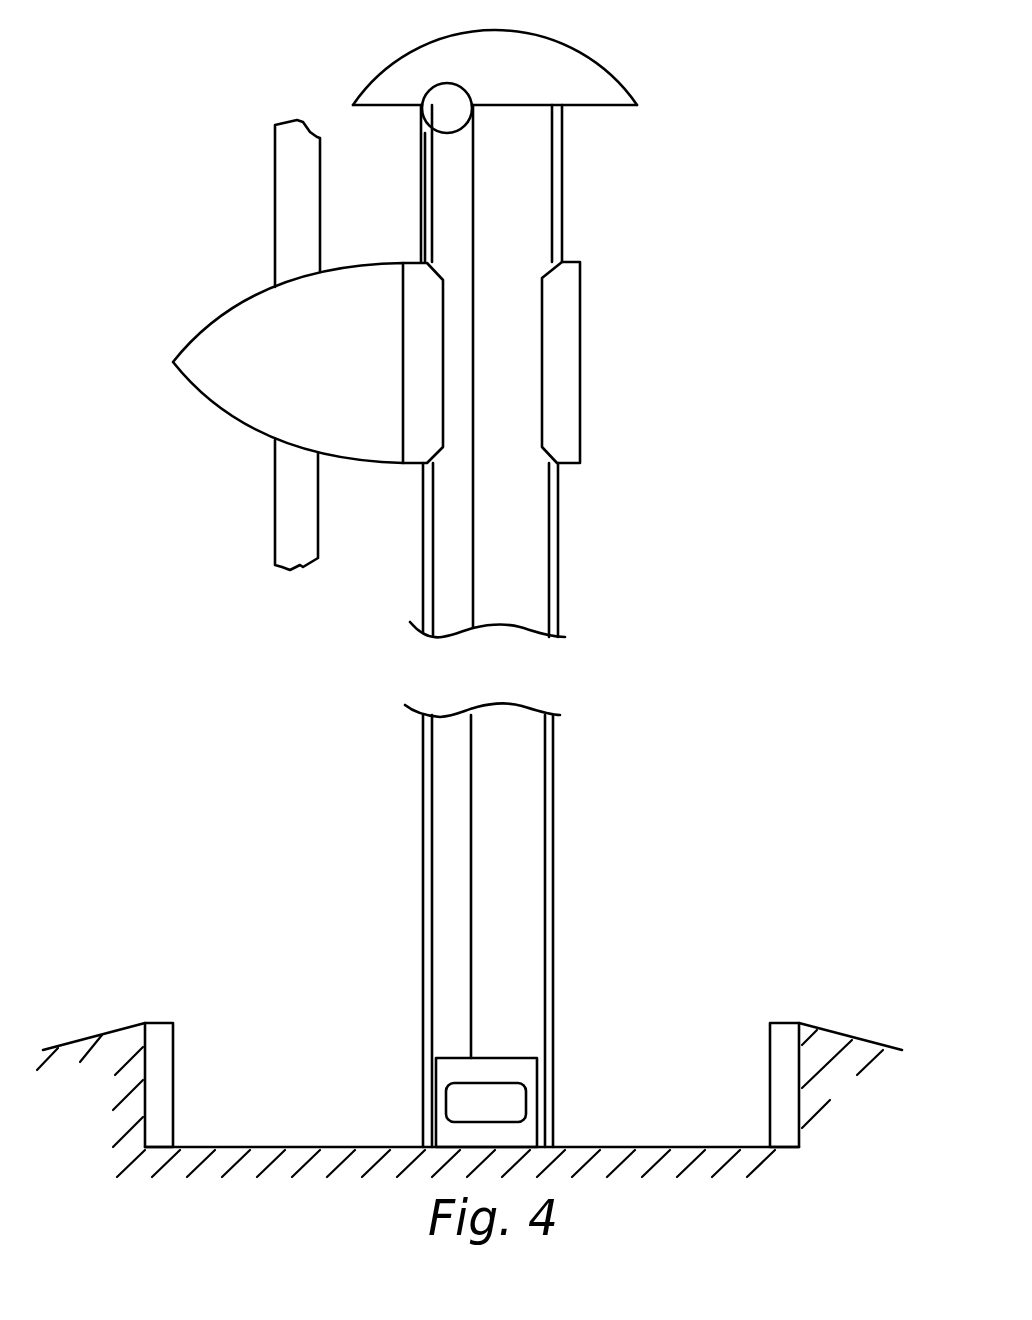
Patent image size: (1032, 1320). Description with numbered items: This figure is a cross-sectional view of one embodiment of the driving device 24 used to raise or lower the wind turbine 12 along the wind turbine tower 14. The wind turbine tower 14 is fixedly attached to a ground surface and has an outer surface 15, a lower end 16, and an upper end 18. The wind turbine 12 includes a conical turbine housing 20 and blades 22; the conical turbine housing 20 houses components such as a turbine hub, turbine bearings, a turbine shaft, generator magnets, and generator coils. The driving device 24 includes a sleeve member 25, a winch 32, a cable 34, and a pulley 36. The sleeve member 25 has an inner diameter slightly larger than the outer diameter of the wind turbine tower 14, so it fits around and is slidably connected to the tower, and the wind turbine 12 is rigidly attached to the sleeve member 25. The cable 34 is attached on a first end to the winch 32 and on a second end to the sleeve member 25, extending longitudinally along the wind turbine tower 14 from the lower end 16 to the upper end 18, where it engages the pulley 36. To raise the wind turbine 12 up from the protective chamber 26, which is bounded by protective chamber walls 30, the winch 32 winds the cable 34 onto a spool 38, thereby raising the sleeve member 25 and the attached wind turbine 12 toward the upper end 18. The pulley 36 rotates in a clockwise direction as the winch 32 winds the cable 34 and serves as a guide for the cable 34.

The wind turbine 12 is at (315, 86).
The wind turbine tower 14 is at (522, 875).
The outer surface 15 is at (553, 782).
The lower end 16 is at (421, 1135).
The upper end 18 is at (543, 113).
The conical turbine housing 20 is at (197, 367).
The blades 22 is at (273, 228).
The driving device 24 is at (392, 1020).
The sleeve member 25 is at (567, 337).
The protective chamber 26 is at (190, 1045).
The protective chamber walls 30 is at (158, 1102).
The winch 32 is at (448, 1075).
The cable 34 is at (473, 172).
The pulley 36 is at (473, 97).
The spool 38 is at (490, 1082).